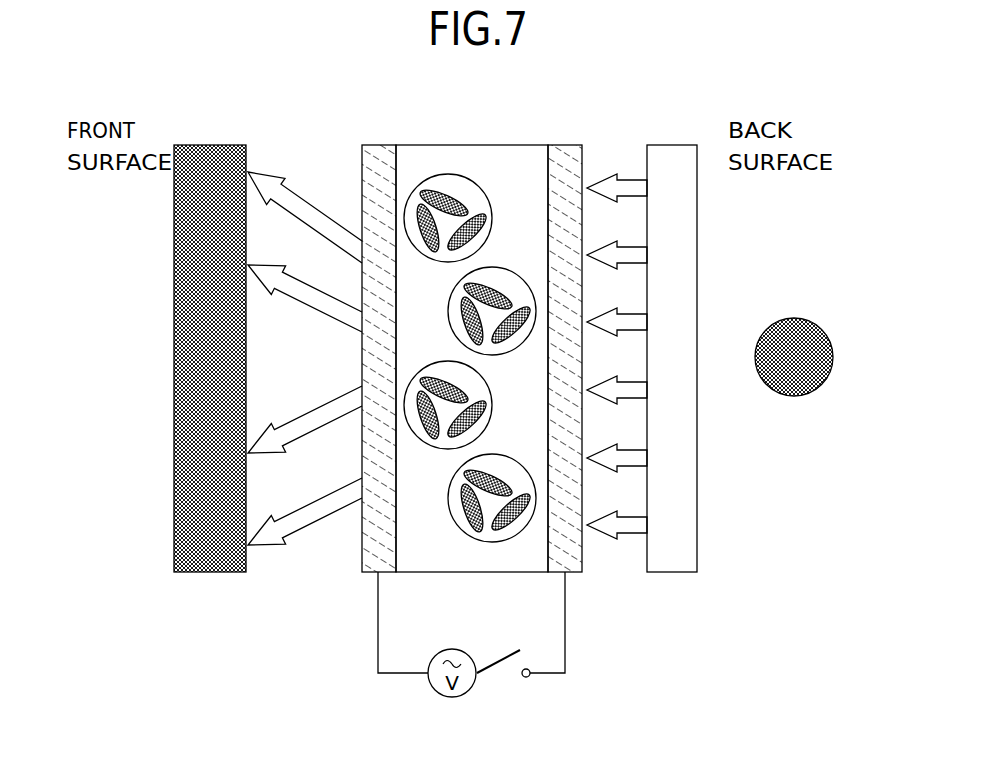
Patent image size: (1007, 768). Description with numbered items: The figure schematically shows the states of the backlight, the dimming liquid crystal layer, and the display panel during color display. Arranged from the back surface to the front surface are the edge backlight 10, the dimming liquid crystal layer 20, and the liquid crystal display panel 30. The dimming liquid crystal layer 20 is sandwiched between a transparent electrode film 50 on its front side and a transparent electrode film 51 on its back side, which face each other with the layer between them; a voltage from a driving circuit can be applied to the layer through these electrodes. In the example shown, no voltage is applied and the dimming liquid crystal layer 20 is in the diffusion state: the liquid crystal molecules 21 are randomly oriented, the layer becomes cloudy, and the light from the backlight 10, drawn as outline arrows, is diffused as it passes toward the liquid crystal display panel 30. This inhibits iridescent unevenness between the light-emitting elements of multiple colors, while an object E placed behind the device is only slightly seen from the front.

The edge backlight 10 is at (673, 158).
The dimming liquid crystal layer 20 is at (474, 353).
The liquid crystal molecules 21 is at (487, 541).
The liquid crystal display panel 30 is at (210, 153).
The transparent electrode film 50 is at (377, 155).
The transparent electrode film 51 is at (567, 153).
The object E is at (805, 385).